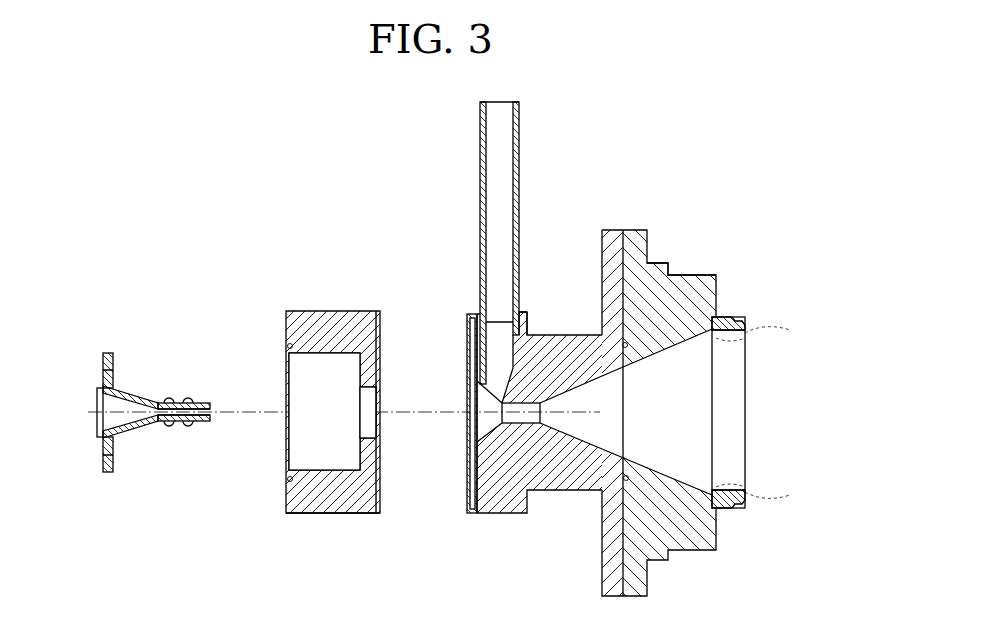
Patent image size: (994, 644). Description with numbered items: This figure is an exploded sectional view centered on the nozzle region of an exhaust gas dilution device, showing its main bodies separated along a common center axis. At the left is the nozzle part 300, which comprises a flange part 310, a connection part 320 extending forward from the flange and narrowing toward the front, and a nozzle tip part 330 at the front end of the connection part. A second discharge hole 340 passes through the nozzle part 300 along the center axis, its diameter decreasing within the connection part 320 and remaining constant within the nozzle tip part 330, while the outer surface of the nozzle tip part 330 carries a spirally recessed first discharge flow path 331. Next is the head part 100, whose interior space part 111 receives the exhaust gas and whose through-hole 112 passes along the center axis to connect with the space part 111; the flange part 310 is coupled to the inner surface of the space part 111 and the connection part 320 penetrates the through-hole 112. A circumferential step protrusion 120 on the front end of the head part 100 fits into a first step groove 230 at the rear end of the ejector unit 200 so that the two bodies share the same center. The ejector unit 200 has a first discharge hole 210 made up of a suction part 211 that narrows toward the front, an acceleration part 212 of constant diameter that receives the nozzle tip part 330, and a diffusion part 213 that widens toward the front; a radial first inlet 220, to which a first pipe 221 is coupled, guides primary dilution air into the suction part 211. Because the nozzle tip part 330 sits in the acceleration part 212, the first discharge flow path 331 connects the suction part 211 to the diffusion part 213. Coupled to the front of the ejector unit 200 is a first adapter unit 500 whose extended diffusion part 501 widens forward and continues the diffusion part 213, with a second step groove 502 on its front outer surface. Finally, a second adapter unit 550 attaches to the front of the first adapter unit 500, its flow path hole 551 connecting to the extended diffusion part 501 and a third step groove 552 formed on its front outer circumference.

The head part 100 is at (312, 406).
The space part 111 is at (306, 452).
The through-hole 112 is at (363, 509).
The step protrusion 120 is at (382, 322).
The ejector unit 200 is at (611, 228).
The first discharge hole 210 is at (539, 437).
The suction part 211 is at (503, 428).
The acceleration part 212 is at (521, 425).
The diffusion part 213 is at (575, 448).
The first inlet 220 is at (531, 318).
The first pipe 221 is at (481, 147).
The first step groove 230 is at (462, 305).
The nozzle part 300 is at (129, 392).
The flange part 310 is at (106, 352).
The connection part 320 is at (140, 396).
The nozzle tip part 330 is at (190, 412).
The first discharge flow path 331 is at (183, 427).
The second discharge hole 340 is at (114, 414).
The first adapter unit 500 is at (705, 381).
The extended diffusion part 501 is at (746, 340).
The second step groove 502 is at (692, 275).
The second adapter unit 550 is at (759, 380).
The flow path hole 551 is at (746, 490).
The third step groove 552 is at (745, 323).